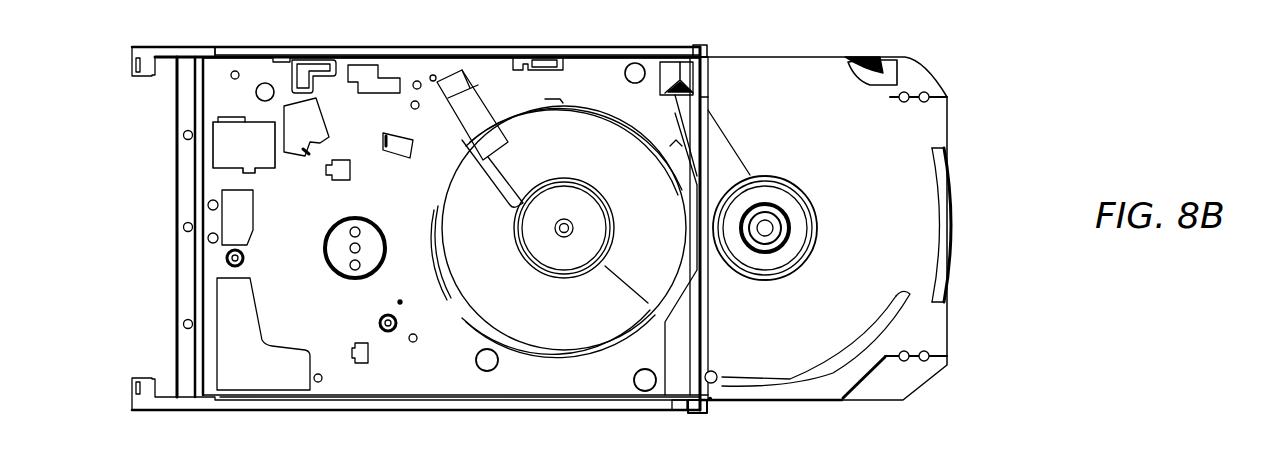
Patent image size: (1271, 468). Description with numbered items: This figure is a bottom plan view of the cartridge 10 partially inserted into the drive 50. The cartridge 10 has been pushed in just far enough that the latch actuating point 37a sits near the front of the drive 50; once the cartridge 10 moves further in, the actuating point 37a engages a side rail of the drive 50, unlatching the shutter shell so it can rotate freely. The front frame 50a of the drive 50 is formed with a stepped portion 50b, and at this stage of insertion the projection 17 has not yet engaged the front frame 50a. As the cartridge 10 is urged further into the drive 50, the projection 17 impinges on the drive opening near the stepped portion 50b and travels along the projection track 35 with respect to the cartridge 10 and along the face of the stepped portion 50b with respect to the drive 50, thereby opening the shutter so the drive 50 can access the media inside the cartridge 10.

The cartridge 10 is at (928, 44).
The drive 50 is at (362, 30).
The front frame 50a is at (710, 94).
The stepped portion 50b is at (704, 313).
The projection track 35 is at (863, 342).
The projection 17 is at (688, 373).
The latch actuating point 37a is at (710, 400).